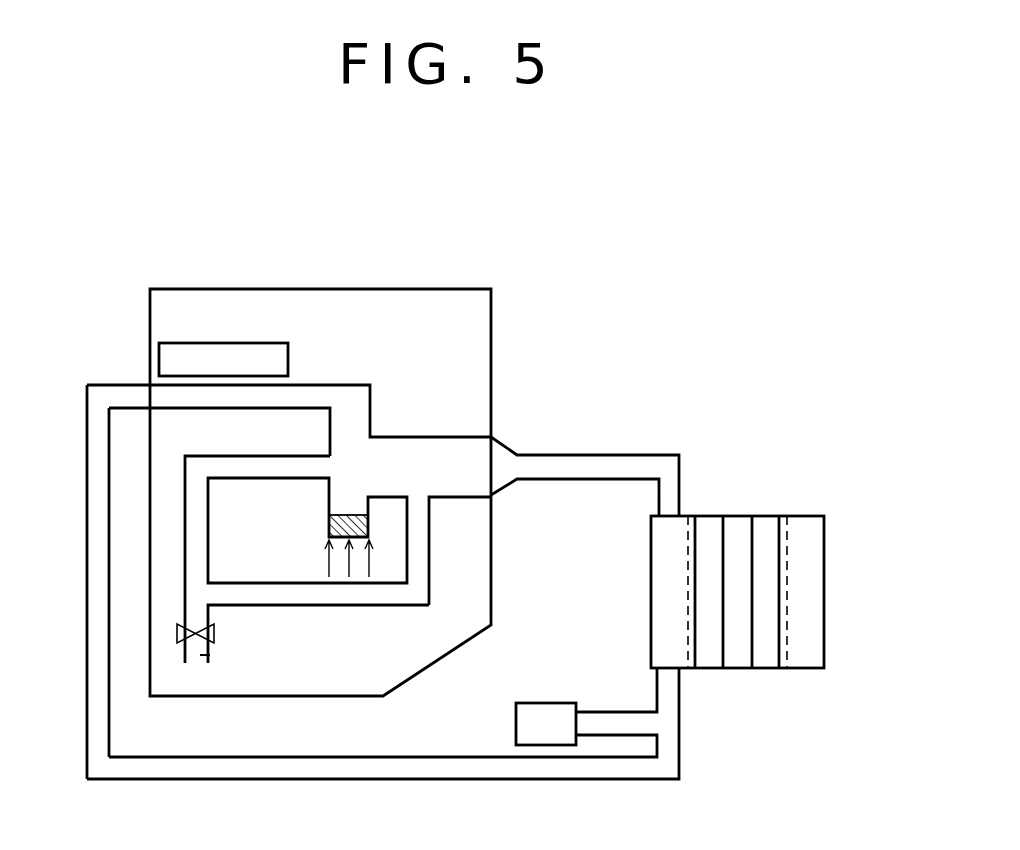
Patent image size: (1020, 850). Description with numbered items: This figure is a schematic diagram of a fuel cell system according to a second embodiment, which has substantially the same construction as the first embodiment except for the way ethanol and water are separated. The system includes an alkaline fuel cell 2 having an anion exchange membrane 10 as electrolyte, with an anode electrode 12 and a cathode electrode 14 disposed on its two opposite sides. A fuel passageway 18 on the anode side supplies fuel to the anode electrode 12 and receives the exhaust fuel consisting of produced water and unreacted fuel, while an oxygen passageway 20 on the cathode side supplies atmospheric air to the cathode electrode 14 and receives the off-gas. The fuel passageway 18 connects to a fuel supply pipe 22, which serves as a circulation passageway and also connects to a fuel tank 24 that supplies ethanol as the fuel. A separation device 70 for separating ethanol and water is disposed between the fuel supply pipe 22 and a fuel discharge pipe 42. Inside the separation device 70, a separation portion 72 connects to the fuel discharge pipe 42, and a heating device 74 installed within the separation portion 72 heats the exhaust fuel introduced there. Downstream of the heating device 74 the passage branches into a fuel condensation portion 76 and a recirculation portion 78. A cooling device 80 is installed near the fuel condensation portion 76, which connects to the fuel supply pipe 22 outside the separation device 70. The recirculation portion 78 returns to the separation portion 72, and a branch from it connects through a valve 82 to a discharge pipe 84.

The alkaline fuel cell 2 is at (745, 550).
The anion exchange membrane 10 is at (738, 530).
The anode electrode 12 is at (712, 530).
The cathode electrode 14 is at (768, 530).
The fuel passageway 18 is at (667, 583).
The oxygen passageway 20 is at (808, 593).
The fuel supply pipe 22 is at (100, 580).
The fuel tank 24 is at (553, 723).
The fuel discharge pipe 42 is at (573, 470).
The separation device 70 is at (498, 318).
The separation portion 72 is at (460, 485).
The heating device 74 is at (329, 519).
The fuel condensation portion 76 is at (300, 400).
The recirculation portion 78 is at (307, 468).
The cooling device 80 is at (242, 362).
The valve 82 is at (215, 634).
The discharge pipe 84 is at (208, 657).